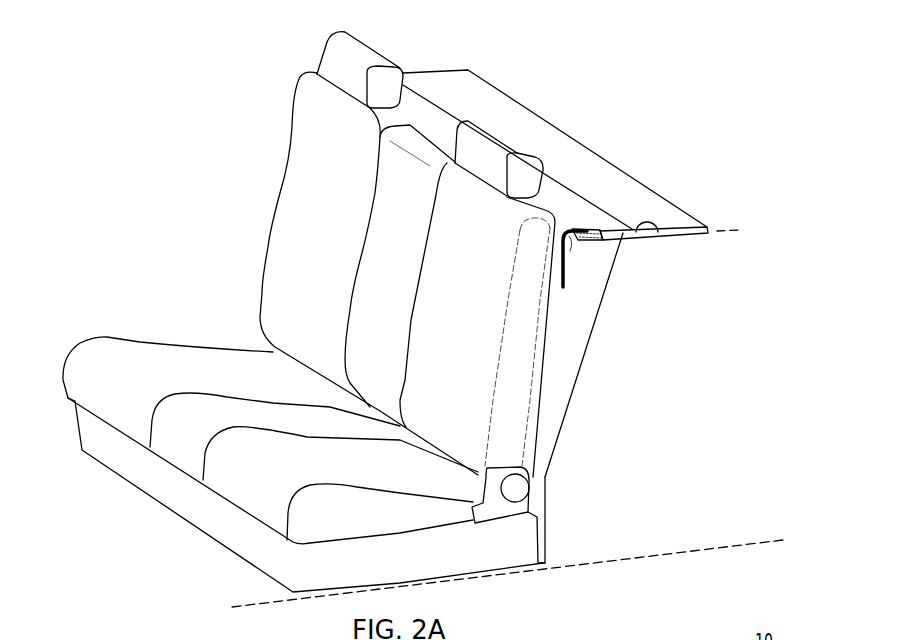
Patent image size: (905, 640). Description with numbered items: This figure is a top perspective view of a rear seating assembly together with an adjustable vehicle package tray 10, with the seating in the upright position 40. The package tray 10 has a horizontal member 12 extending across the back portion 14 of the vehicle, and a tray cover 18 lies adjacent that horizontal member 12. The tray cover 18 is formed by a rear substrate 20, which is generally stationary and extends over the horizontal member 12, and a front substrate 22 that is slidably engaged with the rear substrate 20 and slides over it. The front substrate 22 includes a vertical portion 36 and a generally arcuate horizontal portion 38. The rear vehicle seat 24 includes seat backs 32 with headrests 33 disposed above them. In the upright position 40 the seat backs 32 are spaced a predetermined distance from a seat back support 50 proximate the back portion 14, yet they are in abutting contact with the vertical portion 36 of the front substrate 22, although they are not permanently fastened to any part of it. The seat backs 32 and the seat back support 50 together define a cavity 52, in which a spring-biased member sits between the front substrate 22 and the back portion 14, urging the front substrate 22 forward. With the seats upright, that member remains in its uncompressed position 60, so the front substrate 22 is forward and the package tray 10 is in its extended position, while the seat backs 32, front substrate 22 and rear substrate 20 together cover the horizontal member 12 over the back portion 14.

The vehicle package tray 10 is at (677, 93).
The horizontal member 12 is at (658, 236).
The back portion 14 is at (667, 450).
The tray cover 18 is at (727, 167).
The rear substrate 20 is at (522, 115).
The front substrate 22 is at (568, 203).
The rear vehicle seat 24 is at (188, 360).
The seat back 32 is at (327, 242).
The headrest 33 is at (333, 47).
The vertical portion 36 is at (566, 255).
The horizontal portion 38 is at (600, 227).
The upright position 40 is at (239, 163).
The seat back support 50 is at (572, 306).
The cavity 52 is at (560, 351).
The uncompressed position 60 is at (447, 40).